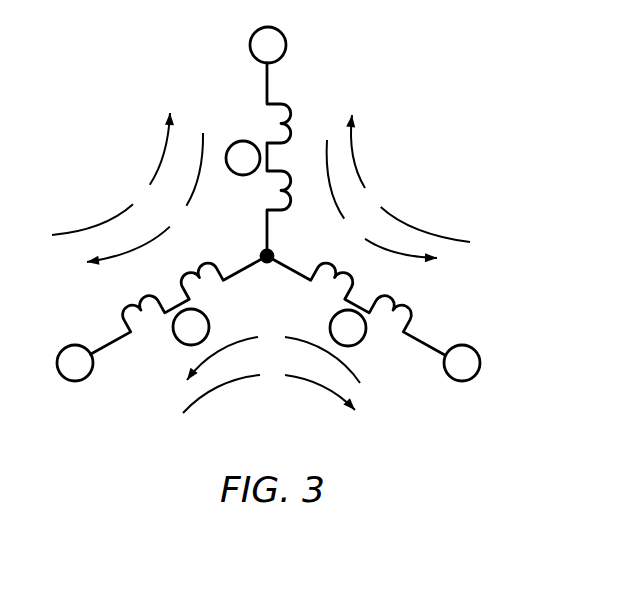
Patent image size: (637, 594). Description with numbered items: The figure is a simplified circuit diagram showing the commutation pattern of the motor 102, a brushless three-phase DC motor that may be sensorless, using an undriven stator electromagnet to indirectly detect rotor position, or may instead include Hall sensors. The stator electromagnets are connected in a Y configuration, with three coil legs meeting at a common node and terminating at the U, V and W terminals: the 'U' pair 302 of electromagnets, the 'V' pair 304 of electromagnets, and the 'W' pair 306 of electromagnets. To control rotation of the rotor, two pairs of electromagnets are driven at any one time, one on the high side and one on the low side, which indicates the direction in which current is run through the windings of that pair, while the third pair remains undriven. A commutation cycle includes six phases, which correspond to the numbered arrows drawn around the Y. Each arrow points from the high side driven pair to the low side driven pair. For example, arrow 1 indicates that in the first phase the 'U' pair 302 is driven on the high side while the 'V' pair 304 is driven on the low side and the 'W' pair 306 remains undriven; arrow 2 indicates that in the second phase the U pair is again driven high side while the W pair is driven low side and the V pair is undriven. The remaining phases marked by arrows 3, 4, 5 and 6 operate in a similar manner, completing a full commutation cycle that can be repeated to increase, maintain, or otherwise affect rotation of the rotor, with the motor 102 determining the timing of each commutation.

The motor 102 is at (427, 68).
The 'U' pair of electromagnets 302 is at (255, 58).
The 'V' pair of electromagnets 304 is at (444, 367).
The 'W' pair of electromagnets 306 is at (93, 366).
The first phase 1 is at (382, 201).
The second phase 2 is at (145, 199).
The third phase 3 is at (273, 357).
The fourth phase 4 is at (408, 178).
The fifth phase 5 is at (113, 174).
The sixth phase 6 is at (269, 386).